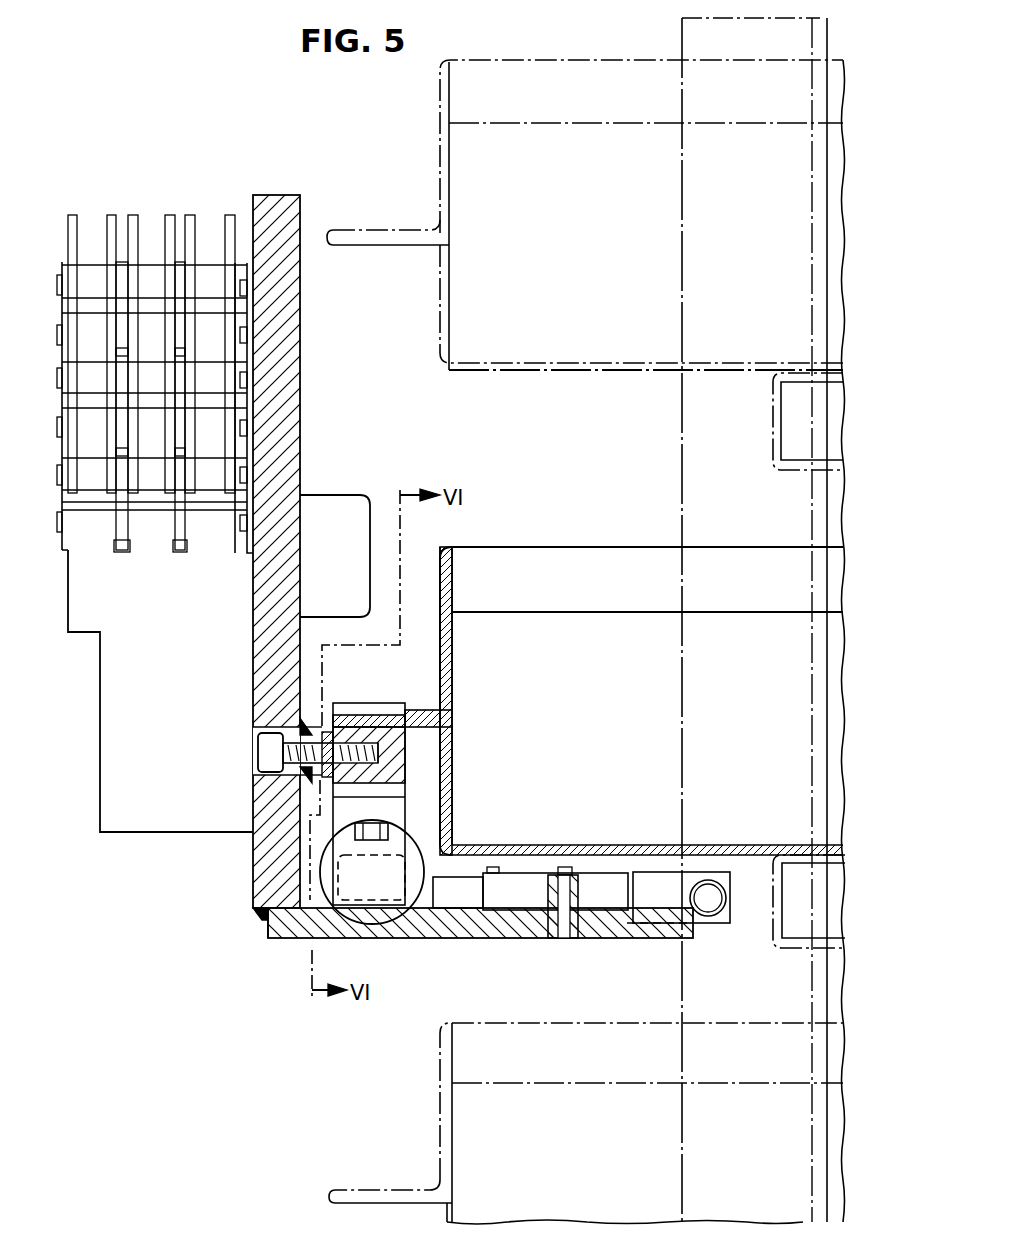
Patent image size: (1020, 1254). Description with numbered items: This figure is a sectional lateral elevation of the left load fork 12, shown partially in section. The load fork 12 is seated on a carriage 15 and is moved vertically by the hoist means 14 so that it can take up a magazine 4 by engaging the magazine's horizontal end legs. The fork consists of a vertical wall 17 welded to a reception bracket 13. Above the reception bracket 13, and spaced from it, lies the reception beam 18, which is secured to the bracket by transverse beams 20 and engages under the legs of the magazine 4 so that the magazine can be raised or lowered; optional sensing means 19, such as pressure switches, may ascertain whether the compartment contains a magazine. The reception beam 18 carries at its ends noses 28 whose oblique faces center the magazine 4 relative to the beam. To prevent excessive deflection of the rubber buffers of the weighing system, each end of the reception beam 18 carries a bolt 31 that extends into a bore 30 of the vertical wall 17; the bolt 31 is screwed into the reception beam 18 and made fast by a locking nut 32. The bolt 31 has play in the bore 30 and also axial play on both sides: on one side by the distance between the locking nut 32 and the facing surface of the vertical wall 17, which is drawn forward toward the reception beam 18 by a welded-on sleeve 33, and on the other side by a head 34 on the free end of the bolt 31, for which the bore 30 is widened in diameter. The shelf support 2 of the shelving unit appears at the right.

The shelf support 2 is at (682, 36).
The magazine 4 is at (522, 130).
The load fork 12 is at (256, 926).
The reception bracket 13 is at (518, 925).
The hoist means 14 is at (121, 250).
The carriage 15 is at (128, 658).
The vertical wall 17 is at (272, 195).
The reception beam 18 is at (397, 774).
The sensing means 19 is at (604, 890).
The transverse beam 20 is at (417, 846).
The nose 28 is at (394, 704).
The bore 30 is at (315, 774).
The bolt 31 is at (303, 781).
The locking nut 32 is at (310, 775).
The sleeve 33 is at (306, 730).
The head 34 is at (260, 754).